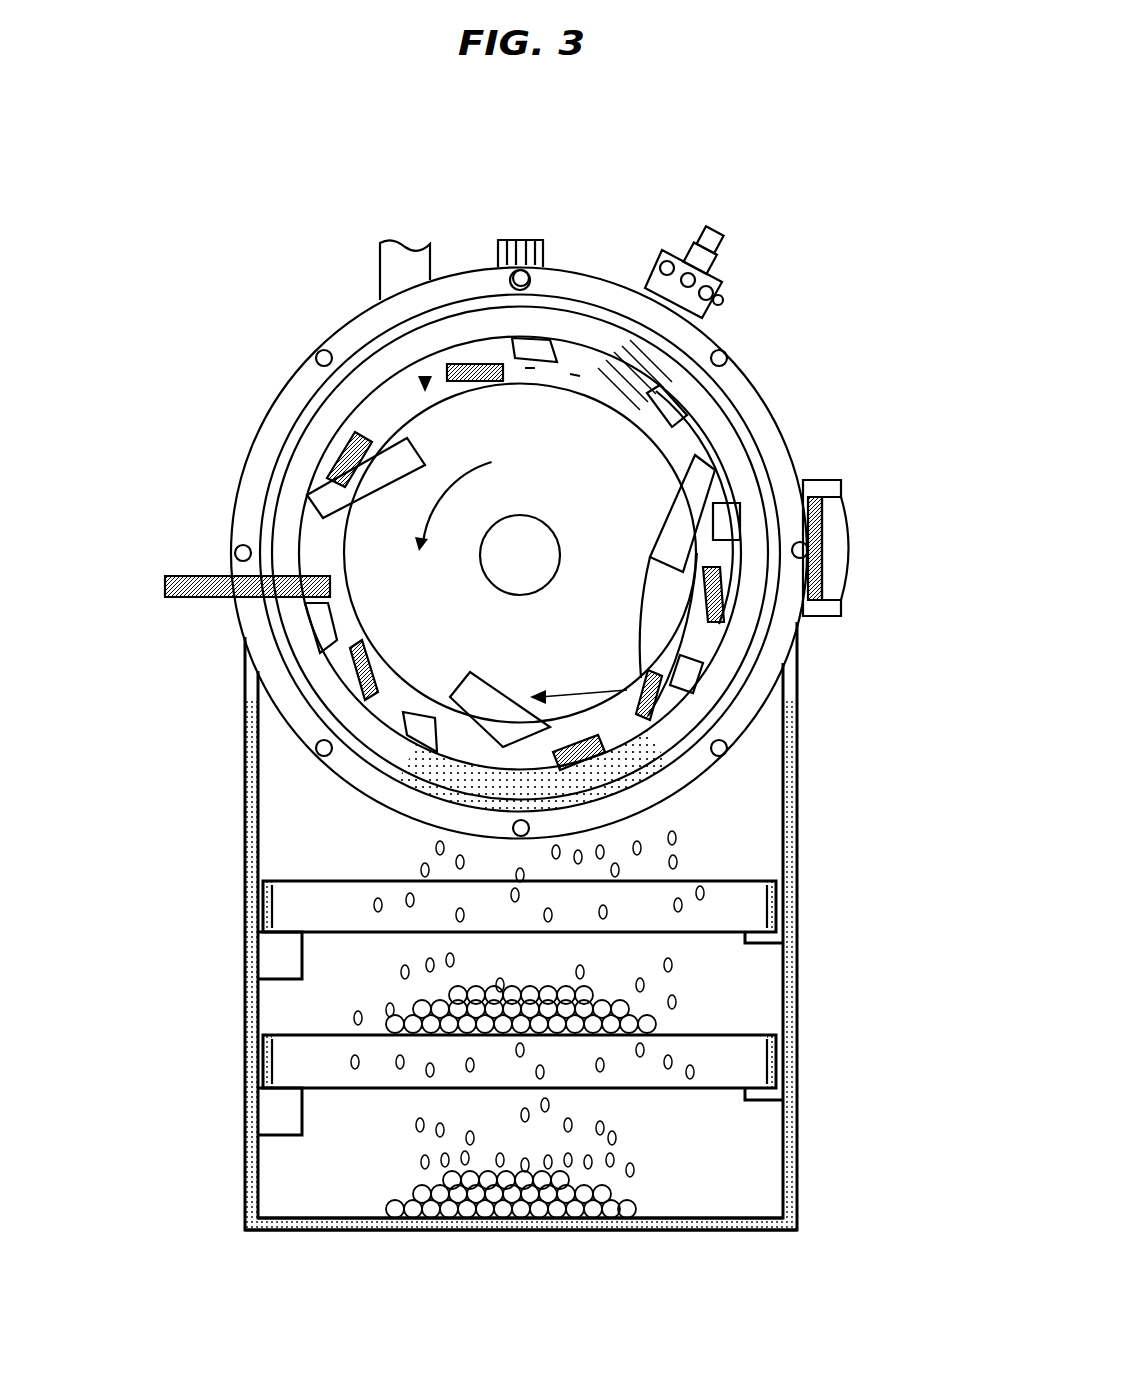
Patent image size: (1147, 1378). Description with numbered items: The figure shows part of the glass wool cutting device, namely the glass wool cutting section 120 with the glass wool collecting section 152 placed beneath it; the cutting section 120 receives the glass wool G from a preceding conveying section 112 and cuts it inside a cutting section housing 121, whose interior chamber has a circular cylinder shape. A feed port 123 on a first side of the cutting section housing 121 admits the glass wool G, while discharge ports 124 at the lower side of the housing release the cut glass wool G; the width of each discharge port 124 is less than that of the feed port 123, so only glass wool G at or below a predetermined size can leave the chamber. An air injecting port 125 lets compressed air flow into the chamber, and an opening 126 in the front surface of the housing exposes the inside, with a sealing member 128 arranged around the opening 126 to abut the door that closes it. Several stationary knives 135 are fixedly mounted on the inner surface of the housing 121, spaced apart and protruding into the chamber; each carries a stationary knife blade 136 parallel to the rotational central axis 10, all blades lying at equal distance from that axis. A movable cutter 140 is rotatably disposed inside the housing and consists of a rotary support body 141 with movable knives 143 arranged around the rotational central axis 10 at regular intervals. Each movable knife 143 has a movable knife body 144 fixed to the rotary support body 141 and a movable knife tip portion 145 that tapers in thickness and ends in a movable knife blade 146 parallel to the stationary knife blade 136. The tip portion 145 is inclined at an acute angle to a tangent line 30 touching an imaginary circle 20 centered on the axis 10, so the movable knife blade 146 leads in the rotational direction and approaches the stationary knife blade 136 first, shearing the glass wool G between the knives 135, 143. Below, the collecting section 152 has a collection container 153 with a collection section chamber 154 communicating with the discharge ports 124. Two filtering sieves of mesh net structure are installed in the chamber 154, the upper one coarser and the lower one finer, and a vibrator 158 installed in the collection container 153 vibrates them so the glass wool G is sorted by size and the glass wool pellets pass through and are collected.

The rotational central axis 10 is at (797, 708).
The imaginary circle 20 is at (290, 478).
The tangent line 30 is at (790, 868).
The outer wall 112 is at (735, 354).
The glass wool cutting section 120 is at (755, 236).
The cutting section housing 121 is at (377, 432).
The feed port 123 is at (235, 557).
The discharge port 124 is at (385, 786).
The air injecting port 125 is at (725, 300).
The opening 126 is at (690, 412).
The sealing member 128 is at (540, 262).
The stationary knife 135 is at (486, 420).
The stationary knife blade 136 is at (650, 290).
The movable cutter 140 is at (425, 378).
The rotary support body 141 is at (507, 337).
The movable knife 143 is at (316, 350).
The movable knife body 144 is at (556, 552).
The movable knife tip portion 145 is at (813, 497).
The movable knife blade 146 is at (720, 480).
The glass wool collecting section 152 is at (210, 996).
The collection container 153 is at (240, 1213).
The collection section chamber 154 is at (765, 1162).
The vibrator 158 is at (250, 958).
The glass wool G is at (292, 425).